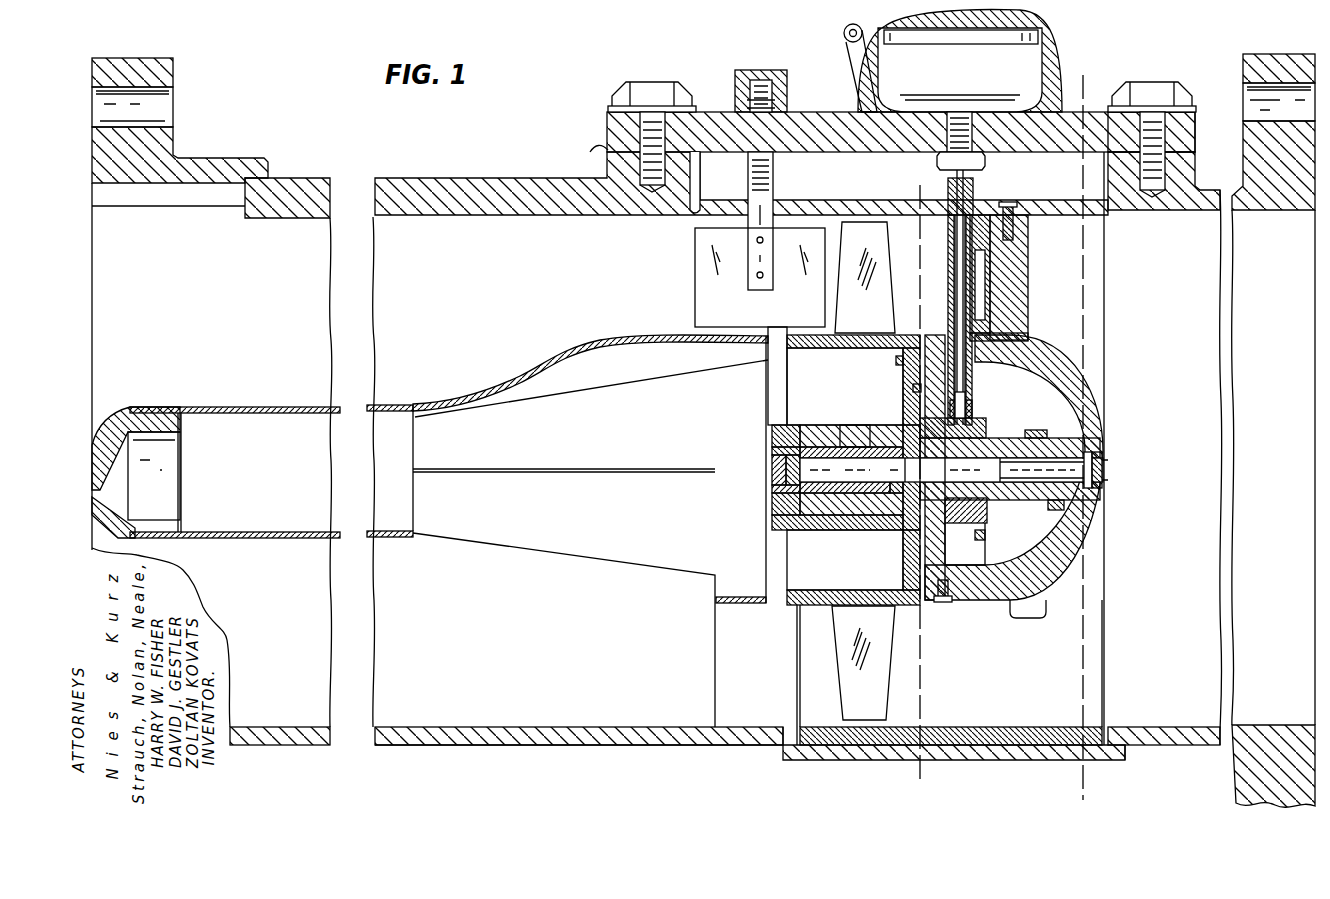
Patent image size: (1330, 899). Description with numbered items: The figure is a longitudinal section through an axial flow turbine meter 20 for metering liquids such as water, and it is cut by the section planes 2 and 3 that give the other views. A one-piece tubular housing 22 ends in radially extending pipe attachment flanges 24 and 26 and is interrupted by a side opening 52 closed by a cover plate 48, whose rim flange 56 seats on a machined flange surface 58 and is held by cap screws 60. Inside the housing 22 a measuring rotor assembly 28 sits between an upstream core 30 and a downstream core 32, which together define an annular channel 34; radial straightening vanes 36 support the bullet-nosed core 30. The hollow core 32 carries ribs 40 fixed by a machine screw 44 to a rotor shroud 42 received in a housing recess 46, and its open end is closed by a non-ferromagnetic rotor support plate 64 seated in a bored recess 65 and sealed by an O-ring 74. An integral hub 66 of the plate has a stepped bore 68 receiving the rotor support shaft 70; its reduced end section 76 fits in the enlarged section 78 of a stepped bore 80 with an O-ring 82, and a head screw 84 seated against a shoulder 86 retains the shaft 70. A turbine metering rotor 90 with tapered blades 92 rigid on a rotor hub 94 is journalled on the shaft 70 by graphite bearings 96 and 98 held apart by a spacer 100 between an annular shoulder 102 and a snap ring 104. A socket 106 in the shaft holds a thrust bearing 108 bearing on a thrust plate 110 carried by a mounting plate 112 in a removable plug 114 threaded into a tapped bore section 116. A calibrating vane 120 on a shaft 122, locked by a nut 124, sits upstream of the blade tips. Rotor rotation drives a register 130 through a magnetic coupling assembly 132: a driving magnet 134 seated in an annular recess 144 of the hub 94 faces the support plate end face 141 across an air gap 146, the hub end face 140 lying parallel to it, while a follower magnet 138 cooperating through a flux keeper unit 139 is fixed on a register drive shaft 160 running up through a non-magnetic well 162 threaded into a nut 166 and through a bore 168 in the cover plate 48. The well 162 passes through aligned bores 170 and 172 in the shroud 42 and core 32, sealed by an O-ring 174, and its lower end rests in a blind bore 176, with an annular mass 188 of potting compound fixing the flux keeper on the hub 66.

The section line 2- 2 is at (896, 187).
The section line 3- 3 is at (1063, 77).
The axial flow turbine meter 20 is at (624, 762).
The housing 22 is at (297, 188).
The pipe attachment flange 24 is at (173, 72).
The pipe attachment flange 26 is at (1243, 60).
The measuring rotor assembly 28 is at (901, 626).
The upstream core 30 is at (286, 540).
The downstream core 32 is at (1092, 548).
The annular channel 34 is at (741, 708).
The radial straightening vanes 36 is at (601, 314).
The ribs 40 is at (1028, 272).
The rotor shroud 42 is at (860, 750).
The machine screw 44 is at (1013, 230).
The recess 46 is at (957, 752).
The cover plate 48 is at (718, 105).
The side opening 52 is at (695, 217).
The flange 56 is at (1196, 130).
The flange surface 58 is at (600, 152).
The cap screws 60 is at (648, 82).
The rotor support plate 64 is at (913, 388).
The bored recess 65 is at (896, 362).
The hub 66 is at (982, 520).
The stepped bore 68 is at (992, 446).
The rotor support shaft 70 is at (855, 479).
The O-ring 74 is at (946, 603).
The end section 76 is at (1012, 492).
The enlarged section 78 is at (1038, 442).
The stepped bore 80 is at (1106, 464).
The O-ring 82 is at (1054, 502).
The head screw 84 is at (1106, 484).
The shoulder 86 is at (1110, 472).
The turbine metering rotor 90 is at (813, 608).
The blades 92 is at (854, 254).
The rotor hub 94 is at (790, 345).
The bearing 96 is at (825, 517).
The bearing 98 is at (865, 516).
The spacer 100 is at (856, 432).
The annular shoulder 102 is at (893, 516).
The snap ring 104 is at (772, 510).
The socket 106 is at (772, 496).
The thrust bearing 108 is at (772, 486).
The thrust plate 110 is at (772, 468).
The mounting plate 112 is at (770, 458).
The removable plug 114 is at (772, 446).
The tapped bore section 116 is at (772, 430).
The calibrating vane 120 is at (708, 315).
The shaft 122 is at (776, 184).
The nut 124 is at (788, 102).
The register 130 is at (950, 71).
The magnetic coupling assembly 132 is at (897, 532).
The driving magnet 134 is at (910, 427).
The follower magnet 138 is at (987, 428).
The flux keeper unit 139 is at (965, 416).
The end face 140 is at (893, 340).
The end face 141 is at (903, 380).
The annular recess 144 is at (947, 532).
The air gap 146 is at (993, 470).
The register drive shaft 160 is at (955, 310).
The well 162 is at (1028, 300).
The nut 166 is at (986, 161).
The bore 168 is at (975, 138).
The bore 170 is at (973, 187).
The bore 172 is at (951, 327).
The O-ring 174 is at (1028, 352).
The blind bore 176 is at (975, 420).
The annular mass of potting compound 188 is at (985, 542).